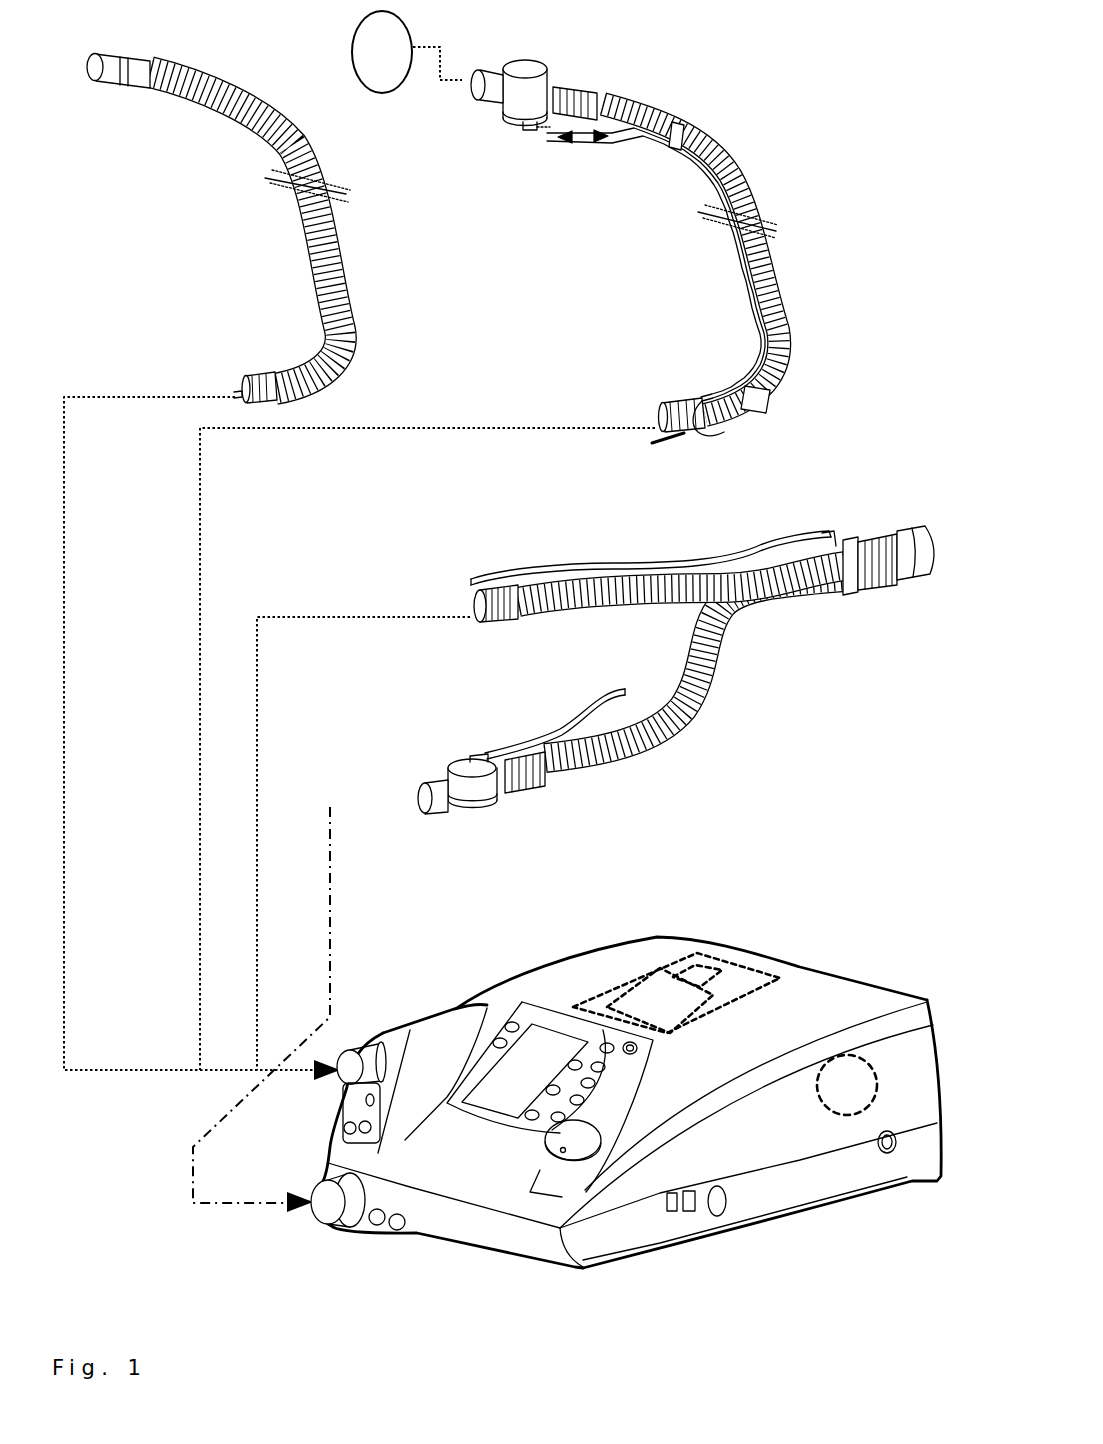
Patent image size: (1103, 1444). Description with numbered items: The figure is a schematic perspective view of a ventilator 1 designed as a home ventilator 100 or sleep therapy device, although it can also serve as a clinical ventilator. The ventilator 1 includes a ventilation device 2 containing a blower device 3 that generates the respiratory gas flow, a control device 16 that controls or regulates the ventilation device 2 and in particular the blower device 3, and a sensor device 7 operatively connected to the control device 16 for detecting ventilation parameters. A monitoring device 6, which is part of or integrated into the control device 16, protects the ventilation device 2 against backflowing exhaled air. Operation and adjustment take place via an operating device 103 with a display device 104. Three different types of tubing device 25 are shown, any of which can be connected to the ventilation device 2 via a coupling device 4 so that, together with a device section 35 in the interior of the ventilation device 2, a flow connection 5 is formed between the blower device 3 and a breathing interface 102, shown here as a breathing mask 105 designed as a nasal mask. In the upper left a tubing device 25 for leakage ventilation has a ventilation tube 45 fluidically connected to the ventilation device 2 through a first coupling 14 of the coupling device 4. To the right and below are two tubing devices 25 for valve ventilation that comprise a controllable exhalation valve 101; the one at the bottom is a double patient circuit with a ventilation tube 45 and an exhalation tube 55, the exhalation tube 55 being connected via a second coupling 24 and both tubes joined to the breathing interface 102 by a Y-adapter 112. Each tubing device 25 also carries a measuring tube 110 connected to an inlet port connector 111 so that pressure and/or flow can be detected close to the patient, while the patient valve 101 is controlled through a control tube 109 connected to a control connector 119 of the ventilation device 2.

The ventilator 1 is at (125, 1281).
The home ventilator 100 is at (128, 1245).
The ventilation device 2 is at (822, 987).
The blower device 3 is at (847, 1082).
The coupling device 4 is at (351, 1020).
The flow connection 5 is at (156, 1088).
The monitoring device 6 is at (652, 1007).
The sensor device 7 is at (698, 973).
The control device 16 is at (740, 982).
The first coupling 14 is at (373, 1058).
The second coupling 24 is at (328, 1202).
The tubing device 25 is at (772, 148).
The device section 35 is at (420, 1163).
The ventilation tube 45 is at (745, 200).
The exhalation tube 55 is at (730, 615).
The exhalation valve 101 is at (545, 66).
The breathing interface 102 is at (348, 38).
The operating device 103 is at (589, 1036).
The display device 104 is at (528, 1042).
The breathing mask 105 is at (378, 80).
The control tube 109 is at (712, 441).
The measuring tube 110 is at (237, 388).
The inlet port connector 111 is at (345, 1128).
The Y-adapter 112 is at (897, 532).
The control connector 119 is at (359, 1130).